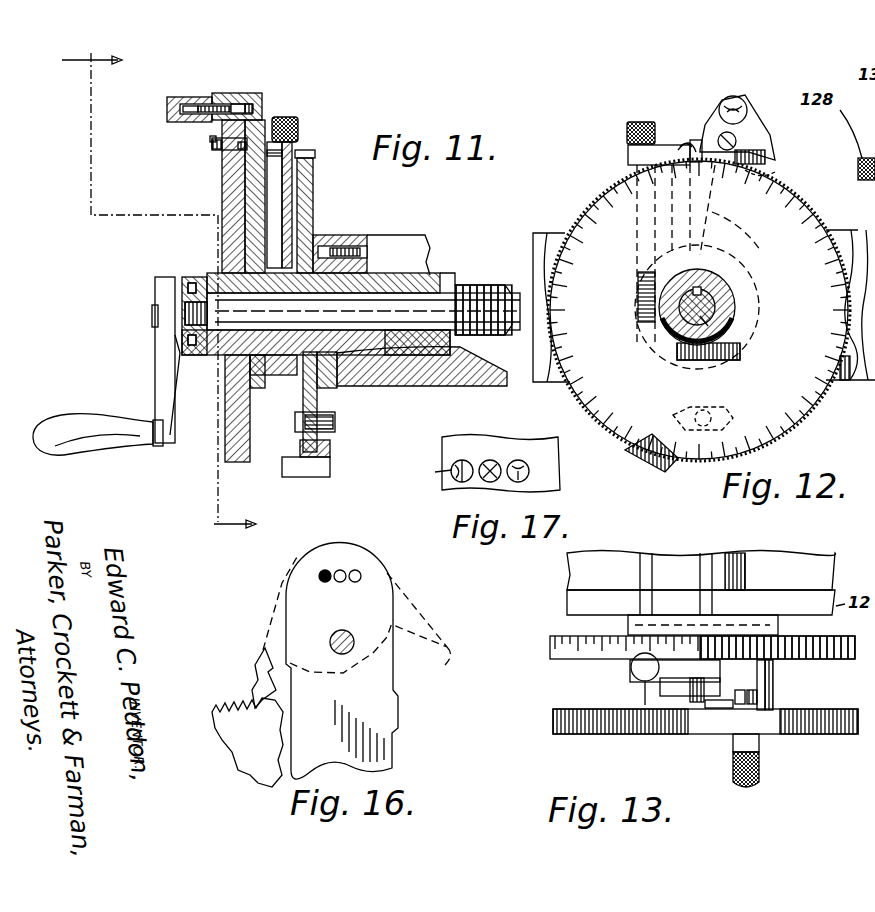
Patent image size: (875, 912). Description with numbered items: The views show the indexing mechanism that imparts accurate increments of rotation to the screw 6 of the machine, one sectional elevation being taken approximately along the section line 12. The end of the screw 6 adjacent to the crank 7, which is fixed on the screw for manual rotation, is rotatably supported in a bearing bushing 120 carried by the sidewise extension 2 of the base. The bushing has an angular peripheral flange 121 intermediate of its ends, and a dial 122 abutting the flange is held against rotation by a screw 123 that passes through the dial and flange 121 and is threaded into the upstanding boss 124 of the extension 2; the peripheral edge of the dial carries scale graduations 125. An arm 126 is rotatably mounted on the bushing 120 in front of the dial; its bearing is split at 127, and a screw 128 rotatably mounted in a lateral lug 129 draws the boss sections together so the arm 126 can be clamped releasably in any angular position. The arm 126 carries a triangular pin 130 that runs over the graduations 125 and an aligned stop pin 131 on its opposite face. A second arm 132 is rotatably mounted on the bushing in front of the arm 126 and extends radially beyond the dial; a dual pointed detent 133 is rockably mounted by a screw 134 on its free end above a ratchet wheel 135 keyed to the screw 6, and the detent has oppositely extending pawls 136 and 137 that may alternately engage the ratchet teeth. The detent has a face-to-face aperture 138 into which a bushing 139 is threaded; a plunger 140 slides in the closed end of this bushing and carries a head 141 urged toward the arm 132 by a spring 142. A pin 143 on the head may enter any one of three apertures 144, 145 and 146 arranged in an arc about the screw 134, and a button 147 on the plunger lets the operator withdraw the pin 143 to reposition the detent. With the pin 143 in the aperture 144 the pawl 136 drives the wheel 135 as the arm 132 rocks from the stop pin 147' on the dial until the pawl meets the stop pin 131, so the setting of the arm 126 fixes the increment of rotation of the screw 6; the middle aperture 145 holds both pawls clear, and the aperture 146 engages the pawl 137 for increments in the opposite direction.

In FIG. 11, the sidewise extension 2 is at (432, 386).
In FIG. 12, the sidewise extension 2 is at (832, 395).
In FIG. 11, the screw 6 is at (490, 335).
In FIG. 12, the screw 6 is at (710, 326).
In FIG. 11, the crank 7 is at (76, 428).
In FIG. 11, the section line 12 is at (142, 301).
In FIG. 11, the bearing bushing 120 is at (395, 272).
In FIG. 12, the bearing bushing 120 is at (735, 296).
In FIG. 13, the bearing bushing 120 is at (748, 570).
In FIG. 11, the peripheral flange 121 is at (300, 389).
In FIG. 11, the dial 122 is at (305, 478).
In FIG. 11, the screw 123 is at (347, 246).
In FIG. 11, the upstanding boss 124 is at (337, 235).
In FIG. 12, the scale graduations 125 is at (699, 310).
In FIG. 13, the scale graduations 125 is at (552, 655).
In FIG. 11, the arm 126 is at (290, 195).
In FIG. 12, the arm 126 is at (735, 250).
In FIG. 13, the arm 126 is at (720, 625).
In FIG. 12, the split 127 is at (638, 302).
In FIG. 11, the screw 128 is at (300, 118).
In FIG. 12, the screw 128 is at (642, 120).
In FIG. 13, the screw 128 is at (640, 588).
In FIG. 12, the lateral lug 129 is at (628, 150).
In FIG. 13, the lateral lug 129 is at (672, 590).
In FIG. 11, the pin 130 is at (296, 150).
In FIG. 12, the pin 130 is at (697, 150).
In FIG. 13, the pin 130 is at (706, 590).
In FIG. 11, the stop pin 131 is at (275, 150).
In FIG. 12, the stop pin 131 is at (704, 152).
In FIG. 13, the stop pin 131 is at (638, 680).
In FIG. 11, the arm 132 is at (258, 227).
In FIG. 17, the arm 132 is at (548, 466).
In FIG. 12, the arm 132 is at (745, 262).
In FIG. 16, the arm 132 is at (380, 612).
In FIG. 12, the dual pointed detent 133 is at (762, 140).
In FIG. 11, the screw 134 is at (230, 150).
In FIG. 12, the screw 134 is at (750, 114).
In FIG. 16, the screw 134 is at (342, 632).
In FIG. 11, the ratchet wheel 135 is at (232, 248).
In FIG. 12, the ratchet wheel 135 is at (580, 225).
In FIG. 16, the ratchet wheel 135 is at (245, 740).
In FIG. 13, the ratchet wheel 135 is at (552, 722).
In FIG. 12, the pawl 136 is at (685, 148).
In FIG. 16, the pawl 136 is at (260, 690).
In FIG. 13, the pawl 136 is at (690, 724).
In FIG. 12, the pawl 137 is at (770, 160).
In FIG. 16, the pawl 137 is at (373, 619).
In FIG. 13, the pawl 137 is at (790, 722).
In FIG. 11, the aperture 138 is at (236, 94).
In FIG. 11, the bushing 139 is at (200, 96).
In FIG. 13, the bushing 139 is at (762, 760).
In FIG. 11, the plunger 140 is at (214, 102).
In FIG. 11, the head 141 is at (252, 93).
In FIG. 11, the spring 142 is at (214, 138).
In FIG. 11, the pin 143 is at (288, 93).
In FIG. 17, the pin 143 is at (452, 474).
In FIG. 16, the pin 143 is at (320, 576).
In FIG. 13, the pin 143 is at (735, 700).
In FIG. 17, the aperture 144 is at (455, 462).
In FIG. 16, the aperture 144 is at (325, 571).
In FIG. 13, the aperture 144 is at (700, 700).
In FIG. 11, the aperture 145 is at (225, 147).
In FIG. 17, the aperture 145 is at (490, 460).
In FIG. 16, the aperture 145 is at (340, 571).
In FIG. 13, the aperture 145 is at (750, 697).
In FIG. 17, the aperture 146 is at (520, 460).
In FIG. 16, the aperture 146 is at (356, 571).
In FIG. 13, the aperture 146 is at (760, 700).
In FIG. 11, the button 147 is at (161, 107).
In FIG. 12, the button 147 is at (780, 72).
In FIG. 13, the button 147 is at (765, 787).
In FIG. 12, the stop pin 147' is at (786, 176).
In FIG. 13, the stop pin 147' is at (795, 685).